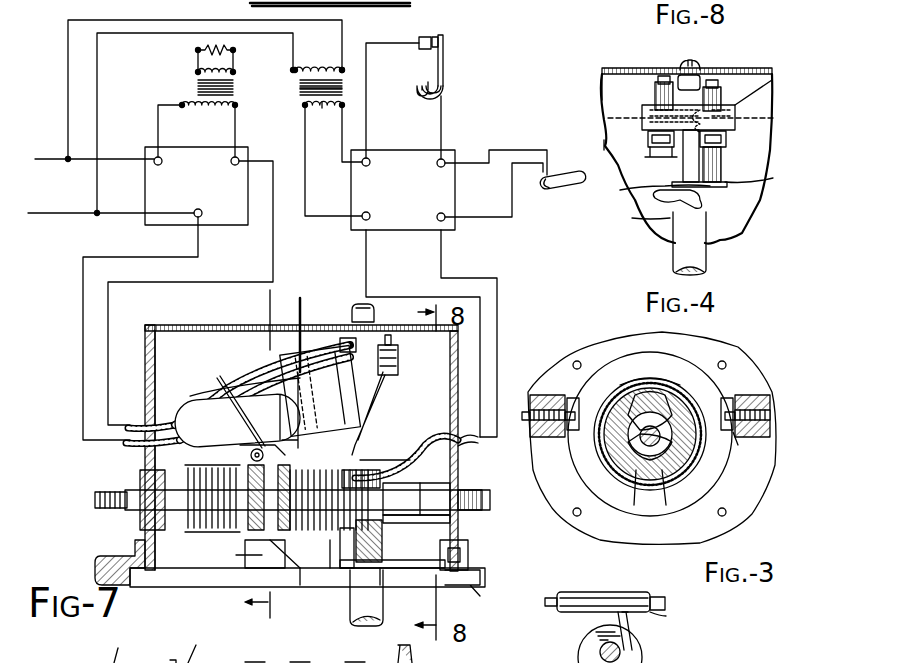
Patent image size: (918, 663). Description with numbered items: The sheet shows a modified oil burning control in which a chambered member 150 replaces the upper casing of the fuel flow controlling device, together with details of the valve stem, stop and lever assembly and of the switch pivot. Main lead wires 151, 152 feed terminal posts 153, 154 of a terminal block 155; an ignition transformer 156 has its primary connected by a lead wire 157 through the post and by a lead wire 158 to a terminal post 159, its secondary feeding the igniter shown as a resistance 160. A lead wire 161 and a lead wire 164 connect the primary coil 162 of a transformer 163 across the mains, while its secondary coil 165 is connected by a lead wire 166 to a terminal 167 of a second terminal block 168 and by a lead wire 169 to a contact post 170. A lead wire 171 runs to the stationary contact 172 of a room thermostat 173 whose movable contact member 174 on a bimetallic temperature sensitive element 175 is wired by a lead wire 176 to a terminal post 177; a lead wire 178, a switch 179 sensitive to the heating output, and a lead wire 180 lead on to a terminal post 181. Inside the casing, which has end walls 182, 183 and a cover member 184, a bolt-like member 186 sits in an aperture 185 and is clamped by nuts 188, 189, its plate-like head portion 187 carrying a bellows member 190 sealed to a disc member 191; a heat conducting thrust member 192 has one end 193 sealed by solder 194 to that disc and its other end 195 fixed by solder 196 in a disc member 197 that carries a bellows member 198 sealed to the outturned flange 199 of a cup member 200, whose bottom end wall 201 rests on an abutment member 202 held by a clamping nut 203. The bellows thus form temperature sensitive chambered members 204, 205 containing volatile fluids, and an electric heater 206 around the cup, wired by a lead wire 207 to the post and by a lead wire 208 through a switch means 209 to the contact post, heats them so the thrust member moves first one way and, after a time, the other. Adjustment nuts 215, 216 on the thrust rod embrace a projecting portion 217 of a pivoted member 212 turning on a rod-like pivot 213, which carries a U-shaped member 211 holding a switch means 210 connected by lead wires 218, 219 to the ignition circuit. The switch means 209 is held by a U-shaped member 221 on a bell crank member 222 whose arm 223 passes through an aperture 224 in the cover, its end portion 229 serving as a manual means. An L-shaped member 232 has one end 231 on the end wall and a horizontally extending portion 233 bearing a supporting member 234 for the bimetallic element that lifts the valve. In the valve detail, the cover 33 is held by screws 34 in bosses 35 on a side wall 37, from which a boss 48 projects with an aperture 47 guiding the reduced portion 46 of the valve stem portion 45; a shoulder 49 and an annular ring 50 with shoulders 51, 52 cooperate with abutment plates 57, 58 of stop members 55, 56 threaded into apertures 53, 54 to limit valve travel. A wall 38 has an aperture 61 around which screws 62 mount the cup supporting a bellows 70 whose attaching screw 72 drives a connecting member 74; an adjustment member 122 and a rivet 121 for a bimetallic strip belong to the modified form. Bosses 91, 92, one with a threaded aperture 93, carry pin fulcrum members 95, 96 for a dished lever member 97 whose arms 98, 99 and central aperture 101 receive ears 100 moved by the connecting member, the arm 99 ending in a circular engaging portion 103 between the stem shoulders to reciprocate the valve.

In FIG. 8, the cover 33 is at (730, 66).
In FIG. 8, the screws 34 is at (682, 58).
In FIG. 8, the bosses 35 is at (700, 80).
In FIG. 8, the side wall 37 is at (600, 78).
In FIG. 8, the stem portion 45 is at (706, 256).
In FIG. 8, the portion of reduced diameter 46 is at (700, 166).
In FIG. 8, the aperture 47 is at (736, 112).
In FIG. 8, the boss 48 is at (766, 86).
In FIG. 8, the shoulder 49 is at (702, 210).
In FIG. 8, the annular ring 50 is at (658, 191).
In FIG. 8, the shoulder 51 is at (705, 190).
In FIG. 8, the shoulder 52 is at (683, 184).
In FIG. 8, the threaded aperture 53 is at (740, 124).
In FIG. 8, the threaded aperture 54 is at (690, 121).
In FIG. 8, the stop member 55 is at (730, 142).
In FIG. 8, the stop member 56 is at (655, 92).
In FIG. 10, the stop member 56 is at (355, 656).
In FIG. 8, the abutment plate 57 is at (761, 175).
In FIG. 8, the abutment plate 58 is at (604, 146).
In FIG. 8, the circular engaging portion 103 is at (645, 216).
In FIG. 4, the wall 38 is at (753, 480).
In FIG. 4, the aperture 61 is at (718, 480).
In FIG. 4, the screws 62 is at (578, 360).
In FIG. 4, the connecting member 74 is at (650, 426).
In FIG. 4, the boss 91 is at (562, 440).
In FIG. 4, the boss 92 is at (738, 438).
In FIG. 4, the pin fulcrum member 95 is at (762, 412).
In FIG. 4, the pin fulcrum member 96 is at (519, 397).
In FIG. 4, the lever member 97 is at (665, 375).
In FIG. 10, the lever member 97 is at (202, 648).
In FIG. 4, the arm 98 is at (572, 398).
In FIG. 4, the arm 99 is at (732, 400).
In FIG. 10, the arm 99 is at (252, 656).
In FIG. 4, the ears 100 is at (650, 454).
In FIG. 4, the central aperture 101 is at (650, 383).
In FIG. 7, the pivoted member 212 is at (240, 425).
In FIG. 3, the pivoted member 212 is at (634, 592).
In FIG. 3, the rod-like pivot 213 is at (660, 620).
In FIG. 7, the adjustment nut 215 is at (249, 571).
In FIG. 3, the adjustment nut 215 is at (595, 644).
In FIG. 7, the projecting portion 217 is at (284, 488).
In FIG. 3, the projecting portion 217 is at (640, 640).
In FIG. 10, the bellows 70 is at (119, 646).
In FIG. 10, the attaching screw 72 is at (157, 656).
In FIG. 10, the rivet 121 is at (414, 658).
In FIG. 10, the adjustment member 122 is at (302, 656).
In FIG. 7, the threaded aperture 93 is at (252, 4).
In FIG. 7, the lead wire 161 is at (110, 20).
In FIG. 7, the chambered member 150 is at (163, 312).
In FIG. 7, the main lead wire 151 is at (54, 159).
In FIG. 7, the main lead wire 152 is at (50, 215).
In FIG. 7, the terminal post 153 is at (155, 165).
In FIG. 7, the terminal post 154 is at (201, 217).
In FIG. 7, the terminal block 155 is at (196, 186).
In FIG. 7, the ignition transformer 156 is at (197, 85).
In FIG. 7, the lead wire 157 is at (158, 125).
In FIG. 7, the lead wire 158 is at (234, 125).
In FIG. 7, the terminal post 159 is at (240, 160).
In FIG. 7, the resistance 160 is at (205, 47).
In FIG. 7, the primary coil 162 is at (318, 66).
In FIG. 7, the transformer 163 is at (298, 92).
In FIG. 7, the lead wire 164 is at (123, 34).
In FIG. 7, the secondary coil 165 is at (322, 110).
In FIG. 7, the lead wire 166 is at (342, 155).
In FIG. 7, the terminal 167 is at (370, 159).
In FIG. 7, the second terminal block 168 is at (403, 190).
In FIG. 7, the lead wire 169 is at (306, 198).
In FIG. 7, the contact post 170 is at (368, 221).
In FIG. 7, the lead wire 171 is at (367, 83).
In FIG. 7, the stationary contact 172 is at (426, 36).
In FIG. 7, the room thermostat 173 is at (450, 52).
In FIG. 7, the movable contact member 174 is at (438, 34).
In FIG. 7, the bimetallic temperature sensitive element 175 is at (446, 76).
In FIG. 7, the lead wire 176 is at (443, 124).
In FIG. 7, the terminal post 177 is at (438, 159).
In FIG. 7, the lead wire 178 is at (500, 149).
In FIG. 7, the switch 179 is at (568, 200).
In FIG. 7, the lead wire 180 is at (512, 218).
In FIG. 7, the terminal post 181 is at (445, 213).
In FIG. 7, the end wall 182 is at (158, 341).
In FIG. 7, the end wall 183 is at (460, 476).
In FIG. 7, the cover member 184 is at (312, 330).
In FIG. 7, the aperture 185 is at (125, 492).
In FIG. 7, the bolt-like member 186 is at (116, 500).
In FIG. 7, the plate-like head portion 187 is at (178, 522).
In FIG. 7, the nut 188 is at (142, 443).
In FIG. 7, the nut 189 is at (140, 548).
In FIG. 7, the bellows member 190 is at (307, 577).
In FIG. 7, the disc member 191 is at (250, 520).
In FIG. 7, the heat conducting thrust member 192 is at (300, 563).
In FIG. 7, the end 193 is at (212, 512).
In FIG. 7, the solder 194 is at (248, 488).
In FIG. 7, the end 195 is at (345, 528).
In FIG. 7, the solder 196 is at (282, 449).
In FIG. 7, the disc member 197 is at (302, 524).
In FIG. 7, the bellows member 198 is at (339, 557).
In FIG. 7, the outturned flange 199 is at (370, 541).
In FIG. 7, the cup member 200 is at (361, 488).
In FIG. 7, the bottom end wall 201 is at (431, 499).
In FIG. 7, the abutment member 202 is at (416, 499).
In FIG. 7, the clamping nut 203 is at (484, 502).
In FIG. 7, the chambered member 204 is at (207, 512).
In FIG. 7, the chambered member 205 is at (340, 586).
In FIG. 7, the electric heater 206 is at (383, 526).
In FIG. 7, the lead wire 207 is at (443, 252).
In FIG. 7, the lead wire 208 is at (368, 274).
In FIG. 7, the switch means 209 is at (408, 390).
In FIG. 7, the switch means 210 is at (196, 396).
In FIG. 7, the U-shaped member 211 is at (266, 400).
In FIG. 7, the adjustment nut 216 is at (272, 604).
In FIG. 7, the lead wire 218 is at (274, 230).
In FIG. 7, the lead wire 219 is at (143, 257).
In FIG. 7, the U-shaped member 221 is at (375, 425).
In FIG. 7, the bell crank member 222 is at (340, 385).
In FIG. 7, the arm 223 is at (297, 338).
In FIG. 7, the aperture 224 is at (260, 299).
In FIG. 7, the end portion 229 is at (303, 295).
In FIG. 7, the end 231 is at (470, 548).
In FIG. 7, the L-shaped member 232 is at (462, 578).
In FIG. 7, the horizontally extending portion 233 is at (420, 572).
In FIG. 7, the supporting member 234 is at (378, 558).